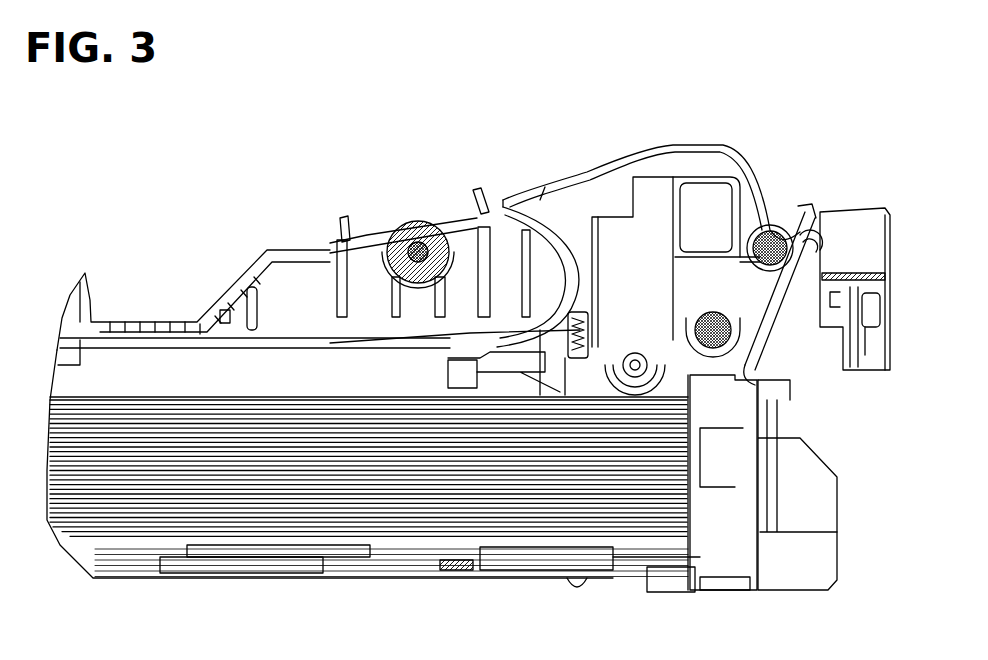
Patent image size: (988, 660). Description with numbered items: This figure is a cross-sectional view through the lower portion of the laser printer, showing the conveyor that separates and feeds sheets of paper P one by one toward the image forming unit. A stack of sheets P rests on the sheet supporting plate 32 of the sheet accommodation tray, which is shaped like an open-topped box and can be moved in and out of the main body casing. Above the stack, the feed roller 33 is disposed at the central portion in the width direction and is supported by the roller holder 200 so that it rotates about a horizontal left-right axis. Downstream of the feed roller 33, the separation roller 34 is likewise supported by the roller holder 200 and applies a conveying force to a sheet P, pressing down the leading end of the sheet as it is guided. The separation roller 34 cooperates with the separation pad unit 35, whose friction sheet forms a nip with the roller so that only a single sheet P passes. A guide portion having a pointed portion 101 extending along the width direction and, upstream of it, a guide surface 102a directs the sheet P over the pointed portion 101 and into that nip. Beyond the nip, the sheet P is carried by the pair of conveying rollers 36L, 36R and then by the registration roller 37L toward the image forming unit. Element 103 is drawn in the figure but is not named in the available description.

The sheet of paper P is at (107, 400).
The registration roller 37L is at (408, 240).
The pointed portion 101 is at (660, 310).
The feed roller 33 is at (622, 372).
The conveying roller 36L is at (800, 236).
The conveying roller 36R is at (818, 240).
The cover 103 is at (797, 312).
The separation roller 34 is at (757, 340).
The separation pad unit 35 is at (697, 368).
The guide surface 102a is at (688, 440).
The roller holder 200 is at (453, 387).
The sheet supporting plate 32 is at (637, 553).